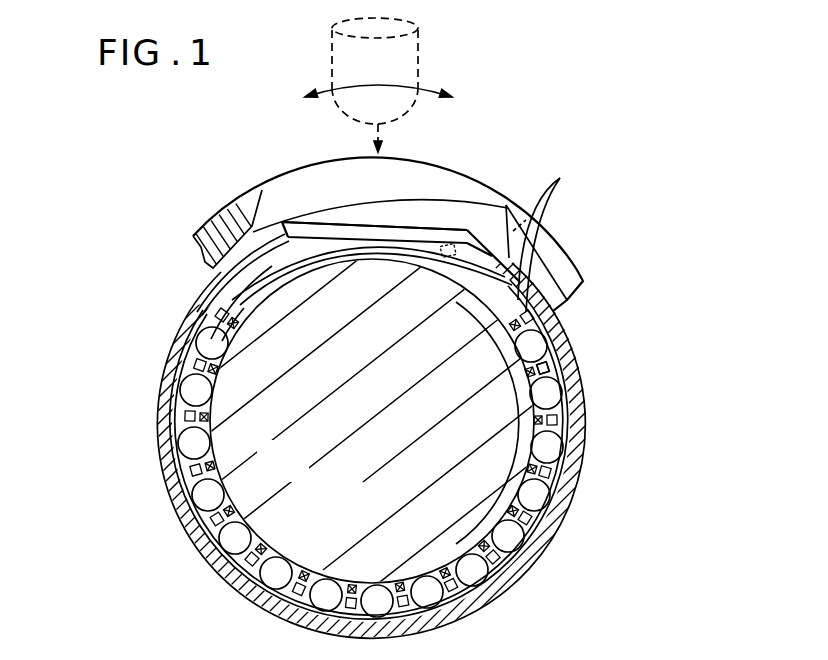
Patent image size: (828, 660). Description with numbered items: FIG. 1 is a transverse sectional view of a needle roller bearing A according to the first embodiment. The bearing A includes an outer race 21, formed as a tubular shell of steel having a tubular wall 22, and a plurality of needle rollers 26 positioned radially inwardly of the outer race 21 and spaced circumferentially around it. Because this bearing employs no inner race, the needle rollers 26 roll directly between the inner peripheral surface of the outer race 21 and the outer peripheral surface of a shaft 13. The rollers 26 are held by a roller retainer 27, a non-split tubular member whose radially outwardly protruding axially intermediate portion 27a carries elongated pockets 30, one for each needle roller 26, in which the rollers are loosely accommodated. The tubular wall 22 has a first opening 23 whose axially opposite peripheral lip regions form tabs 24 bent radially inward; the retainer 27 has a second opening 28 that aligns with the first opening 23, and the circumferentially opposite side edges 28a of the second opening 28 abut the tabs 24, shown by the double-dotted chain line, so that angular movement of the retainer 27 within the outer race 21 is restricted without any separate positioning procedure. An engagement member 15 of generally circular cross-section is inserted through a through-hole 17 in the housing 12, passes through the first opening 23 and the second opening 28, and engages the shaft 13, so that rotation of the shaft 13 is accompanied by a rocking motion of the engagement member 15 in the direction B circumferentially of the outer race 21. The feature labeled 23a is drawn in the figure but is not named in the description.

The housing 12 is at (578, 269).
The shaft 13 is at (253, 382).
The engagement member 15 is at (418, 80).
The through-hole 17 is at (507, 215).
The outer race 21 is at (572, 508).
The tubular wall 22 is at (531, 567).
The first opening 23 is at (403, 232).
The flat surface of plate 23a is at (327, 217).
The tabs 24 is at (364, 215).
The needle rollers 26 is at (240, 528).
The roller retainer 27 is at (310, 567).
The axially intermediate portion 27a is at (549, 368).
The second opening 28 is at (272, 275).
The circumferentially opposite side edges 28a is at (553, 226).
The elongated pockets 30 is at (213, 433).
The needle roller bearing A is at (194, 260).
The direction B is at (324, 88).